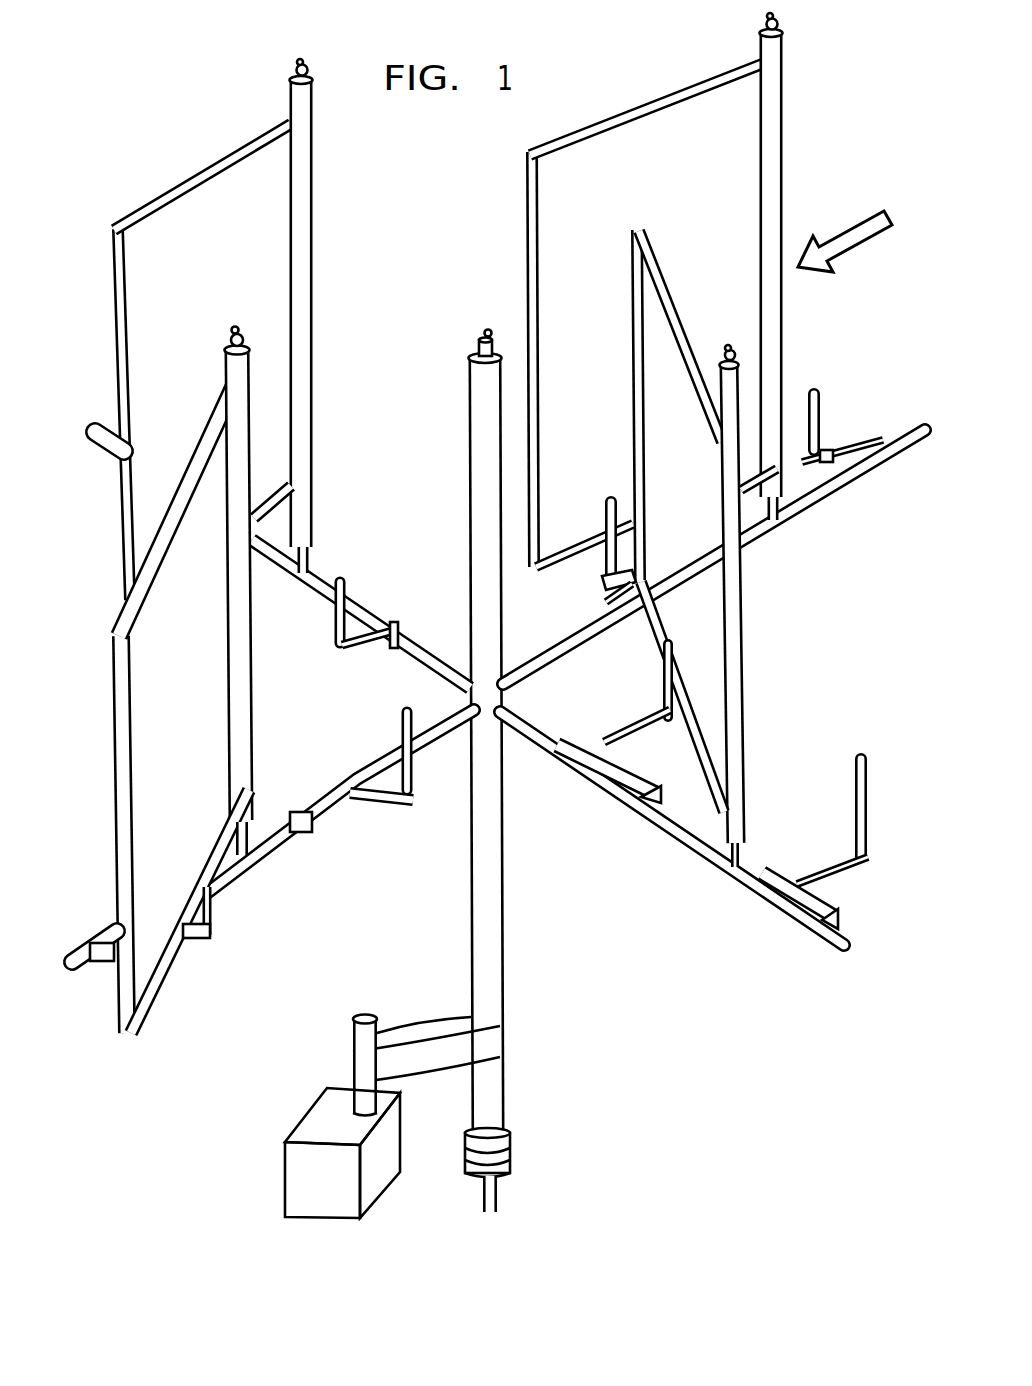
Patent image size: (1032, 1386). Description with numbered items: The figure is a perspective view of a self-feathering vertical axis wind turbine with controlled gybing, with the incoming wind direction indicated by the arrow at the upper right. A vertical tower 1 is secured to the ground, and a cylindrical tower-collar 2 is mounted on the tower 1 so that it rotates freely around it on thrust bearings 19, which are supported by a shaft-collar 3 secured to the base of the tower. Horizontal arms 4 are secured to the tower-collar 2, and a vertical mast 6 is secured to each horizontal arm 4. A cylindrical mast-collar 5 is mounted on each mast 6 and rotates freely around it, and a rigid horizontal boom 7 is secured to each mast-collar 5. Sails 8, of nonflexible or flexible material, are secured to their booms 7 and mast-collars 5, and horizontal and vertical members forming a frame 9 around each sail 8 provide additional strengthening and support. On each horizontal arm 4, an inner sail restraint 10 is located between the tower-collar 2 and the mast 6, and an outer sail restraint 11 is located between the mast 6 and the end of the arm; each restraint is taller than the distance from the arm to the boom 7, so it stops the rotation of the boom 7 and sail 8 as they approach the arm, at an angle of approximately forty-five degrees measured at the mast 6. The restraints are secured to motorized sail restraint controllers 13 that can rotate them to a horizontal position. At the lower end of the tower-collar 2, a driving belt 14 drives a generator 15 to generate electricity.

The vertical tower 1 is at (485, 338).
The tower-collar 2 is at (478, 400).
The shaft-collar 3 is at (512, 1165).
The horizontal arm 4 is at (443, 655).
The mast-collar 5 is at (312, 107).
The mast 6 is at (309, 563).
The boom 7 is at (277, 500).
The sail 8 is at (153, 349).
The frame 9 is at (225, 163).
The inner sail restraint 10 is at (352, 648).
The outer sail restraint 11 is at (208, 937).
The motorized sail restraint controller 13 is at (398, 622).
The driving belt 14 is at (490, 1040).
The generator 15 is at (322, 1105).
The thrust bearings 19 is at (512, 1160).